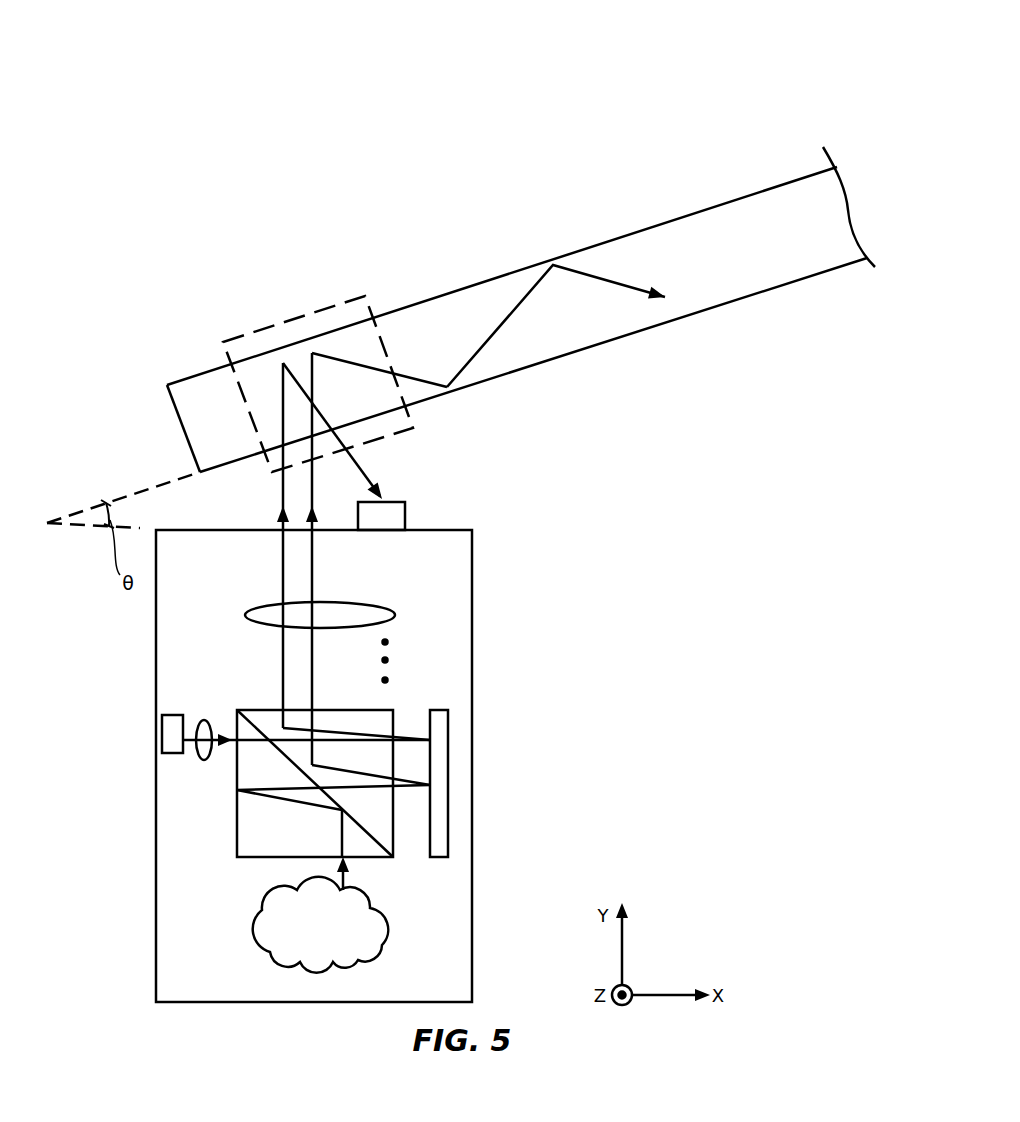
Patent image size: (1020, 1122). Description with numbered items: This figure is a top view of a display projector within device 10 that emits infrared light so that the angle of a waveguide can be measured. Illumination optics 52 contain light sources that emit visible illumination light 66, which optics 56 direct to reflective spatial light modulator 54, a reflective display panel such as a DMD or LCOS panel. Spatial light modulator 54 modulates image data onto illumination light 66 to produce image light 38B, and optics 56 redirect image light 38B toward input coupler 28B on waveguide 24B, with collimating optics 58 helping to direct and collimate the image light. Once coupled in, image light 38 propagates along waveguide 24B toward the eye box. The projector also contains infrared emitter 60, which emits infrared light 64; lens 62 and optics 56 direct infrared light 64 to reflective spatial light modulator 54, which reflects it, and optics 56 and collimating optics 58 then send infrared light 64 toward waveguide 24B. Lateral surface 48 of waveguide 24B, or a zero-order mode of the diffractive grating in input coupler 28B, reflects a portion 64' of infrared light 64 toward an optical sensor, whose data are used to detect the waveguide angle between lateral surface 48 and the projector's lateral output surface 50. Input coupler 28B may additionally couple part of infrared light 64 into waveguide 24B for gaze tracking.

The device 10 is at (668, 60).
The waveguide 24B is at (521, 309).
The lateral surface 48 is at (768, 305).
The input coupler 28B is at (280, 323).
The image light 38 is at (520, 303).
The portion of infrared light 64' is at (357, 446).
The infrared light 64 is at (306, 577).
The image light 38B is at (313, 543).
The lateral surface 50 is at (172, 540).
The collimating optics 58 is at (342, 626).
The optics 56 is at (250, 860).
The infrared emitter 60 is at (173, 755).
The lens 62 is at (205, 760).
The reflective spatial light modulator 54 is at (443, 775).
The illumination light 66 is at (348, 876).
The illumination optics 52 is at (388, 928).